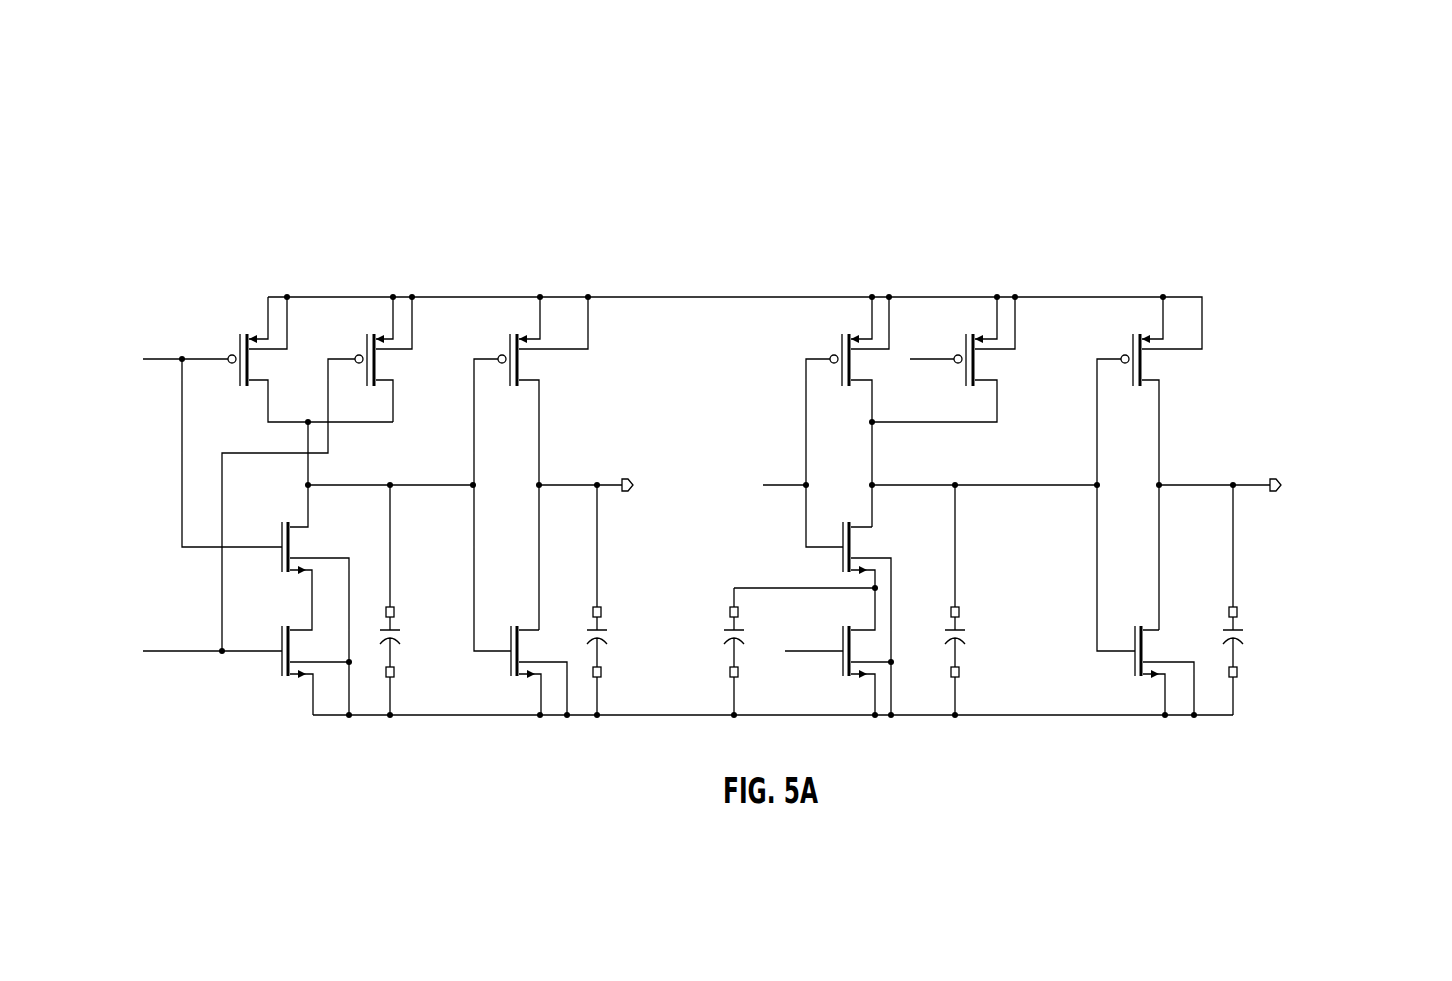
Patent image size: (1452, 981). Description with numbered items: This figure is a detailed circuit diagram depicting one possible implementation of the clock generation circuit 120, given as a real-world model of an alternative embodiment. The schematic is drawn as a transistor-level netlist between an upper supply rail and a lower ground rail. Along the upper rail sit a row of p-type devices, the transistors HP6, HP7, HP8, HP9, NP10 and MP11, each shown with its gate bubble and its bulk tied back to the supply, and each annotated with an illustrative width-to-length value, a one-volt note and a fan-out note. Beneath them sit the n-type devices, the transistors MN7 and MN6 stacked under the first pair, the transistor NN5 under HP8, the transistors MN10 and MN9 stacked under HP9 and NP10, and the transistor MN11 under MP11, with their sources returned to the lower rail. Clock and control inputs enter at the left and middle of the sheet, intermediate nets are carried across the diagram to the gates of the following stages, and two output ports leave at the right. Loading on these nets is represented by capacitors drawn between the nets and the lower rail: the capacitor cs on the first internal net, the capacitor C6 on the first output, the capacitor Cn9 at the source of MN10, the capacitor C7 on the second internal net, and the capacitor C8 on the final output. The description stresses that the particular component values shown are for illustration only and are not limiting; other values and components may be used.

The clock generation circuit 120 is at (1137, 159).
The PMOS transistor HP6 is at (259, 356).
The PMOS transistor HP7 is at (385, 359).
The PMOS transistor HP8 is at (522, 463).
The PMOS transistor HP9 is at (853, 412).
The PMOS transistor NP10 is at (1001, 347).
The PMOS transistor MP11 is at (1174, 463).
The NMOS transistor MN6 is at (288, 657).
The NMOS transistor MN7 is at (296, 568).
The NMOS transistor NN5 is at (529, 654).
The NMOS transistor MN9 is at (876, 657).
The NMOS transistor MN10 is at (861, 604).
The NMOS transistor MN11 is at (1162, 654).
The capacitor cs is at (421, 600).
The capacitor C6 is at (621, 600).
The capacitor Cn9 is at (758, 651).
The capacitor C7 is at (991, 600).
The capacitor C8 is at (1257, 600).